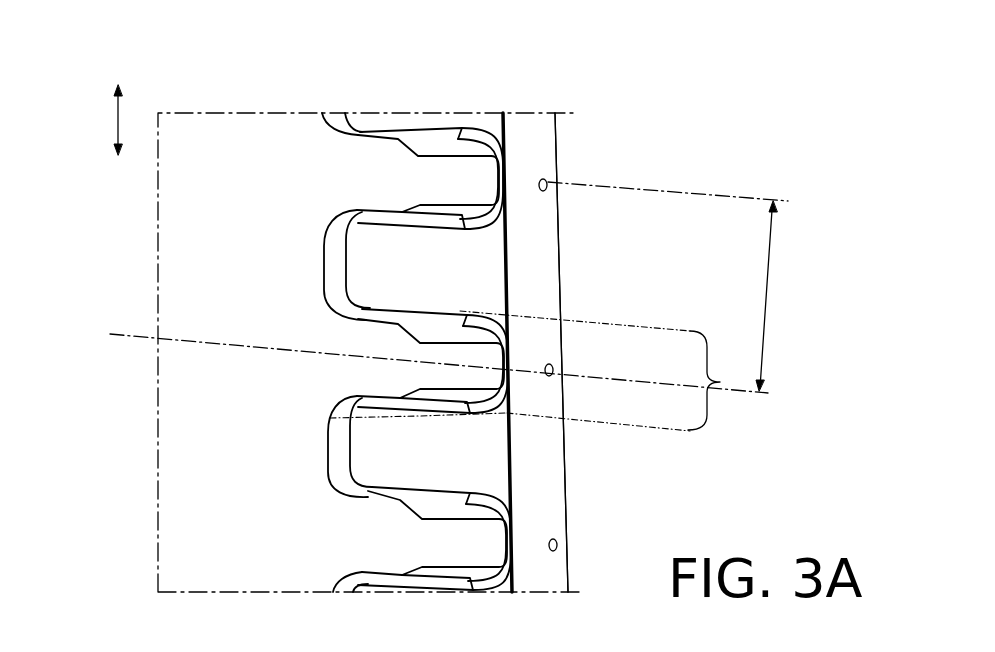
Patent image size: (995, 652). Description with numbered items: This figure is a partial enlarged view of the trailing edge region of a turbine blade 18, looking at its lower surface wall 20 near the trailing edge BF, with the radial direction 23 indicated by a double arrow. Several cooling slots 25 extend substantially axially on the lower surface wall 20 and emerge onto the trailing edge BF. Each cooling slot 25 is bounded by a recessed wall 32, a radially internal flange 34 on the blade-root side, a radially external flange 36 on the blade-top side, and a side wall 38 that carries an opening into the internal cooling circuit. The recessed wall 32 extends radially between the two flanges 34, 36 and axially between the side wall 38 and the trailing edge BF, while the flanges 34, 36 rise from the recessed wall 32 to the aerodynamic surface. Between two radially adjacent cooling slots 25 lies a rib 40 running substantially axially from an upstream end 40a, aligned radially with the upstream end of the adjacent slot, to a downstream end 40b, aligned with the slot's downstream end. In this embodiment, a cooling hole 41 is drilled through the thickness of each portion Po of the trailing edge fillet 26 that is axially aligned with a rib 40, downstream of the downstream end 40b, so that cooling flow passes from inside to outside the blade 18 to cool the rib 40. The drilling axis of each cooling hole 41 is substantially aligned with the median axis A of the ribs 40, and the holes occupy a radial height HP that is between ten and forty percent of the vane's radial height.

The blade 18 is at (376, 298).
The lower surface wall 20 is at (187, 254).
The radial direction 23 is at (118, 120).
The cooling slot 25 is at (430, 266).
The trailing edge fillet 26 is at (563, 583).
The recessed wall 32 is at (363, 462).
The radially internal flange 34 is at (440, 487).
The radially external flange 36 is at (330, 418).
The side wall 38 is at (342, 443).
The rib 40 is at (383, 345).
The upstream end 40a is at (338, 336).
The downstream end 40b is at (509, 357).
The cooling hole 41 is at (549, 183).
The trailing edge BF is at (548, 138).
The radial height of the area comprising the cooling holes HP is at (679, 286).
The portion of the trailing edge fillet Po is at (606, 371).
The median axis A is at (437, 349).